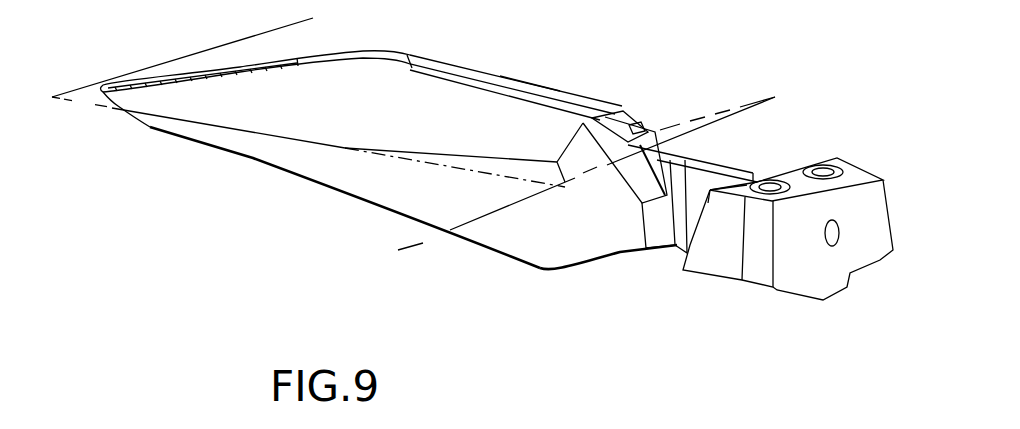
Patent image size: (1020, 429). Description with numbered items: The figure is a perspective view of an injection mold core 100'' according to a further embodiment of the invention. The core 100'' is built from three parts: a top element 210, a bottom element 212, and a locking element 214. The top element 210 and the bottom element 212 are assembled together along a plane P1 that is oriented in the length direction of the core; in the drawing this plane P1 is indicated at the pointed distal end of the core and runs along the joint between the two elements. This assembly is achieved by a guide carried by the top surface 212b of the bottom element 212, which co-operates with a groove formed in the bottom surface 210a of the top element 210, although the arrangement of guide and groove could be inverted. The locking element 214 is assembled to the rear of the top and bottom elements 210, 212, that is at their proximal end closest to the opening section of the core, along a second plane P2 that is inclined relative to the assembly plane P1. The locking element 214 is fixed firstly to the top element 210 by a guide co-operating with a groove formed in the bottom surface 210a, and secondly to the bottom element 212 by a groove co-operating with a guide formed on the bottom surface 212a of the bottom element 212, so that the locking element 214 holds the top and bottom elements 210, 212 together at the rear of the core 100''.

The assembly plane P1 is at (69, 95).
The inclined assembly plane P2 is at (732, 112).
The top element 210 is at (527, 120).
The bottom surface of the top element 210a is at (477, 158).
The bottom element 212 is at (410, 205).
The bottom surface of the bottom element 212a is at (503, 213).
The top surface of the bottom element 212b is at (303, 127).
The locking element 214 is at (583, 247).
The core 100'' is at (763, 194).